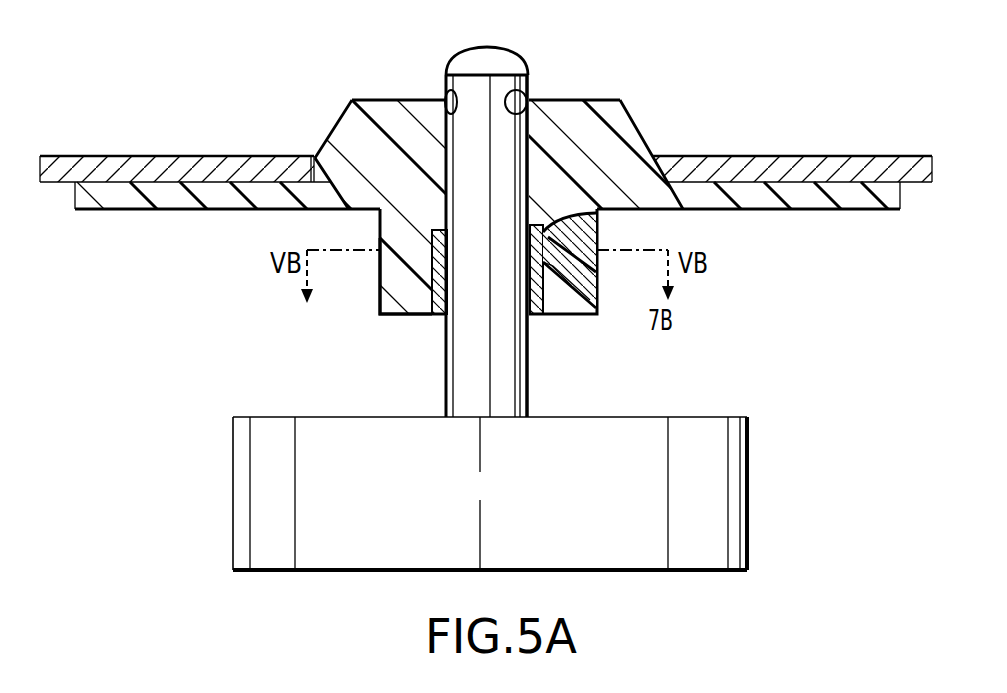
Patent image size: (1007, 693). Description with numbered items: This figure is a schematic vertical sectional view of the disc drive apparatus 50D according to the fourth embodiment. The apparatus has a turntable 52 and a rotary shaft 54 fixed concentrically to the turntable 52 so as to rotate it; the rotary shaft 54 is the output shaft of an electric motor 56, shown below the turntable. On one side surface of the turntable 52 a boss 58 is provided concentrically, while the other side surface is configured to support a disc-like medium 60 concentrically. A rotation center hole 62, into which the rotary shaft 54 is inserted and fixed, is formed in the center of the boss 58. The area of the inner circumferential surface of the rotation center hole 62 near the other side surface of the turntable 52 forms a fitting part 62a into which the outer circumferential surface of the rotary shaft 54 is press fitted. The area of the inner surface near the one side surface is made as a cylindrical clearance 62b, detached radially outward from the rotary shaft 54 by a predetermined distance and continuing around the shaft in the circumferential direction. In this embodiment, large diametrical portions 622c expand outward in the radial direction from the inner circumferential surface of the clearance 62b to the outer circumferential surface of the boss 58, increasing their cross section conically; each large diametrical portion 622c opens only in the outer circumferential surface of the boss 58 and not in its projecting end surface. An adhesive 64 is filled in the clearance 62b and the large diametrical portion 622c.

The disc drive apparatus 50D is at (740, 377).
The turntable 52 is at (123, 205).
The rotary shaft 54 is at (482, 48).
The electric motor 56 is at (752, 490).
The boss 58 is at (379, 273).
The disc-like medium 60 is at (852, 158).
The rotation center hole 62 is at (445, 100).
The fitting part 62a is at (527, 101).
The clearance 62b is at (441, 316).
The large diametrical portion 622c is at (598, 266).
The adhesive 64 is at (535, 317).